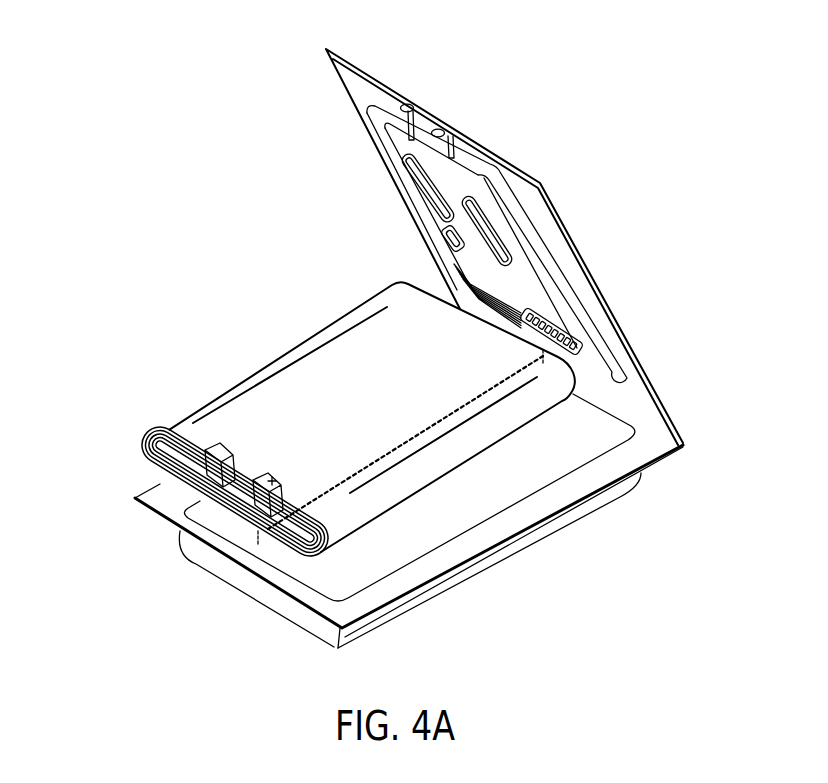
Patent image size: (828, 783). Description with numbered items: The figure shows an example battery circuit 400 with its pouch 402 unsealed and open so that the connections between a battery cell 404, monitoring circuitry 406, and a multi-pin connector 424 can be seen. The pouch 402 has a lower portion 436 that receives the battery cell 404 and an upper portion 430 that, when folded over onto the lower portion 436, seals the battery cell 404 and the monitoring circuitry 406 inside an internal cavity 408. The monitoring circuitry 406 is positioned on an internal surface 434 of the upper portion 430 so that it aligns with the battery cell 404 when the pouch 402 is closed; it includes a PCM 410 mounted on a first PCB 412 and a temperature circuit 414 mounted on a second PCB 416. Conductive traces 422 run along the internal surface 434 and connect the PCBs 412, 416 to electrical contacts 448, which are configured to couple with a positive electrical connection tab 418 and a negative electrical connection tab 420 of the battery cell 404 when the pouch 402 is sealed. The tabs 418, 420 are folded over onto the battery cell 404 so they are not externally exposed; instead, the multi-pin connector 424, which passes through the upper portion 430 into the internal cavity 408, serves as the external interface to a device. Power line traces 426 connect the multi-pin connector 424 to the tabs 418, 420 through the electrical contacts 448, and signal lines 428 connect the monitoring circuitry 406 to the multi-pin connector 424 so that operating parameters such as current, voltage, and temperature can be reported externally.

The battery circuit 400 is at (110, 138).
The pouch 402 is at (574, 523).
The battery cell 404 is at (317, 330).
The monitoring circuitry 406 is at (394, 200).
The internal cavity 408 is at (482, 499).
The PCM 410 is at (406, 162).
The first PCB 412 is at (463, 268).
The temperature circuit 414 is at (487, 238).
The second PCB 416 is at (513, 285).
The positive electrical connection tab 418 is at (255, 490).
The negative electrical connection tab 420 is at (218, 476).
The conductive traces 422 is at (399, 145).
The multi-pin connector 424 is at (582, 348).
The power line traces 426 is at (575, 318).
The signal lines 428 is at (468, 286).
The upper portion 430 is at (512, 113).
The internal surface 434 is at (535, 230).
The lower portion 436 is at (280, 632).
The electrical contacts 448 is at (422, 103).